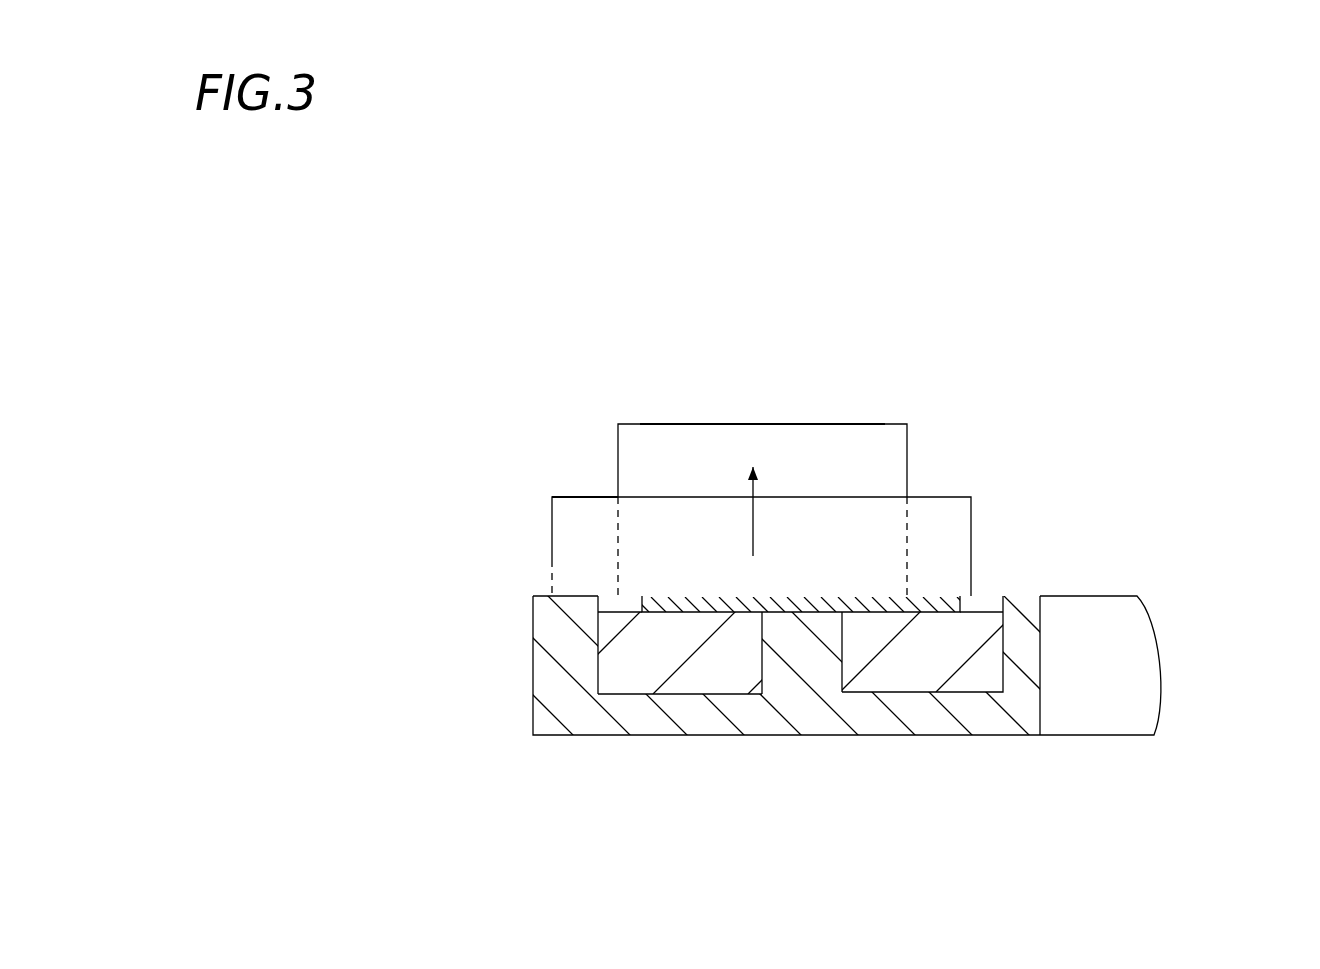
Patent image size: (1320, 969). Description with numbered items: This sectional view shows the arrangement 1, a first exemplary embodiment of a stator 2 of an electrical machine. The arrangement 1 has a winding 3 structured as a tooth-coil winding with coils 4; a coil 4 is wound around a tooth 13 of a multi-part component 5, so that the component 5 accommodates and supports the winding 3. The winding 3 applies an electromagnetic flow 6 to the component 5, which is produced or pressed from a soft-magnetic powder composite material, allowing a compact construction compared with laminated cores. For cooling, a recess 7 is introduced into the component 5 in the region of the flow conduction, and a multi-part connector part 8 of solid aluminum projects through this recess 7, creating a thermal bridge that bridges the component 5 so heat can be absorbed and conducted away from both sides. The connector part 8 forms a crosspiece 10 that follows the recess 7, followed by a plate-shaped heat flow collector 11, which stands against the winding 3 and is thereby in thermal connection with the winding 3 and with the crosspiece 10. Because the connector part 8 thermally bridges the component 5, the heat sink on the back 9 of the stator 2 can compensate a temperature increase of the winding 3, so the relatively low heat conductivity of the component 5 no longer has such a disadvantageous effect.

The arrangement 1 is at (1052, 343).
The stator 2 is at (1083, 591).
The winding 3 is at (577, 518).
The coil 4 is at (599, 533).
The component 5 is at (815, 448).
The electromagnetic flow 6 is at (753, 537).
The recess 7 is at (845, 637).
The connector part 8 is at (556, 683).
The back 9 is at (587, 742).
The crosspiece 10 is at (805, 660).
The heat flow collector 11 is at (673, 607).
The tooth 13 is at (675, 455).